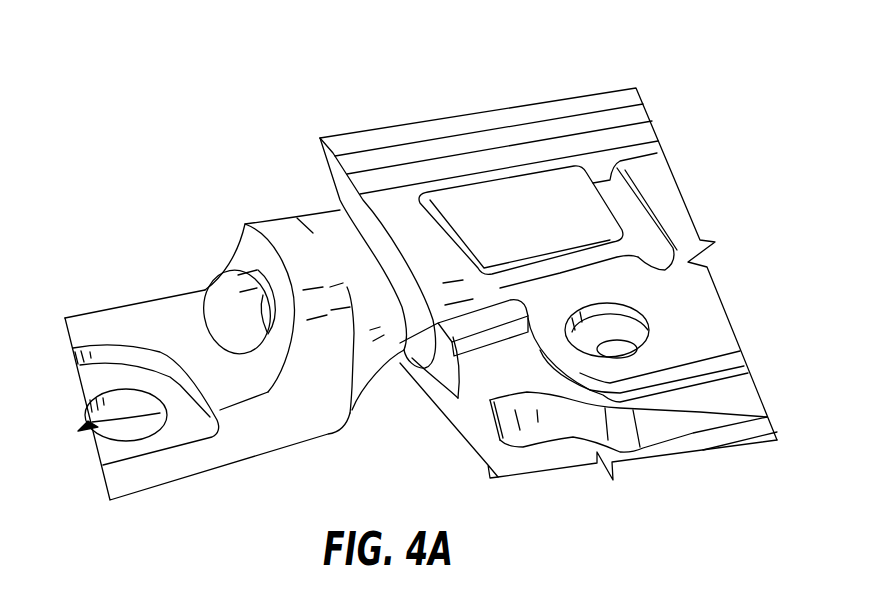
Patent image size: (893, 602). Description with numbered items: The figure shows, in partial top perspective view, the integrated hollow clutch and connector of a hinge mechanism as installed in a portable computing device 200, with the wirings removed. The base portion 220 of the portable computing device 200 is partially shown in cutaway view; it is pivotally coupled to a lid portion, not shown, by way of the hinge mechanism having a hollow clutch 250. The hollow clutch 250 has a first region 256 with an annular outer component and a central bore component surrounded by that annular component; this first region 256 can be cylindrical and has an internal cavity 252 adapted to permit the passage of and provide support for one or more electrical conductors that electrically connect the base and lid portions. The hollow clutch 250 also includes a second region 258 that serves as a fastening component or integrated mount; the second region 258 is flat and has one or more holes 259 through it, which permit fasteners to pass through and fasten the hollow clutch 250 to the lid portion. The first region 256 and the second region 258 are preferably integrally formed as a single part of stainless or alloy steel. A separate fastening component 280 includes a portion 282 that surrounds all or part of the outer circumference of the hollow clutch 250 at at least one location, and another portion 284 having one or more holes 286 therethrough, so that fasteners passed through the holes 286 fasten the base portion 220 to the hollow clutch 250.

The portable computing device 200 is at (698, 56).
The base portion 220 is at (528, 381).
The hollow clutch 250 is at (347, 287).
The internal cavity 252 is at (244, 304).
The first region 256 is at (405, 218).
The second region 258 is at (115, 323).
The holes 259 is at (130, 420).
The fastening component 280 is at (678, 226).
The portion 282 is at (543, 224).
The another portion 284 is at (643, 294).
The holes 286 is at (619, 336).